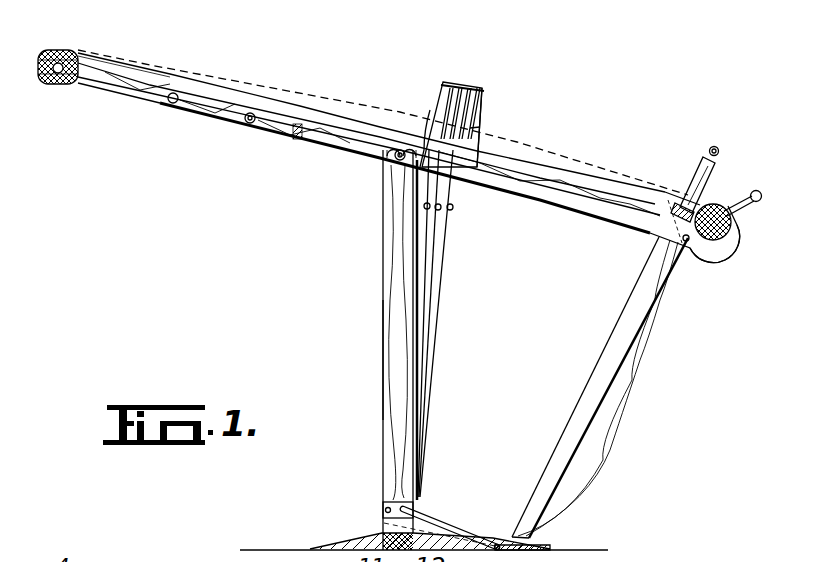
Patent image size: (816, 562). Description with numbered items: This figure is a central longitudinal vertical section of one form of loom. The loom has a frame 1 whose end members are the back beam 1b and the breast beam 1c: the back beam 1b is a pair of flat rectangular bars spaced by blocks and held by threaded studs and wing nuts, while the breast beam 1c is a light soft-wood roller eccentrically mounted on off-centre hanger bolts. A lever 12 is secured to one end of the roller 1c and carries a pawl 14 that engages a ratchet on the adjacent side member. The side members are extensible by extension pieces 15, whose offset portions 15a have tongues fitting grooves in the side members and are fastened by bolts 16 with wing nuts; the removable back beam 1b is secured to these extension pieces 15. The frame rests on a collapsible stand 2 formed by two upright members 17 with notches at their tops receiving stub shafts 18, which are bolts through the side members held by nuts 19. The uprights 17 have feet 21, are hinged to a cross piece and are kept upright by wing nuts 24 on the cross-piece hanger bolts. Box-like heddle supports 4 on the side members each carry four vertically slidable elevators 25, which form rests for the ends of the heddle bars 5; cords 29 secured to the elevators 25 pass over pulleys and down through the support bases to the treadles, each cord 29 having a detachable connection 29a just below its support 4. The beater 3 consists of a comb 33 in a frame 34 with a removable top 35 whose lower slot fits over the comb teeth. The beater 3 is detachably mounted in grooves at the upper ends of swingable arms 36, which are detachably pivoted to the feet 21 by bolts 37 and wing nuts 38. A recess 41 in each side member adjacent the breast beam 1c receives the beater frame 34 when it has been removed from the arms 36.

The frame 1 is at (318, 148).
The end member (back beam) 1b is at (60, 50).
The end member (breast beam) 1c is at (732, 236).
The stand 2 is at (383, 268).
The beater 3 is at (720, 152).
The heddle support 4 is at (68, 88).
The heddle bar 5 is at (472, 130).
The lever 12 is at (742, 204).
The pawl 14 is at (737, 226).
The extension piece 15 is at (107, 86).
The offset portion 15a is at (230, 105).
The bolt 16 is at (257, 113).
The upright member 17 is at (383, 356).
The stub shaft 18 is at (395, 158).
The nut 19 is at (387, 168).
The foot 21 is at (350, 542).
The wing nut 24 is at (470, 85).
The elevator 25 is at (437, 130).
The cord 29 is at (430, 262).
The detachable connection 29a is at (454, 210).
The comb 33 is at (698, 185).
The frame (beater frame) 34 is at (680, 201).
The removable top 35 is at (714, 147).
The swingable arm 36 is at (634, 341).
The bolt 37 is at (513, 540).
The wing nut 38 is at (532, 536).
The recess 41 is at (687, 244).